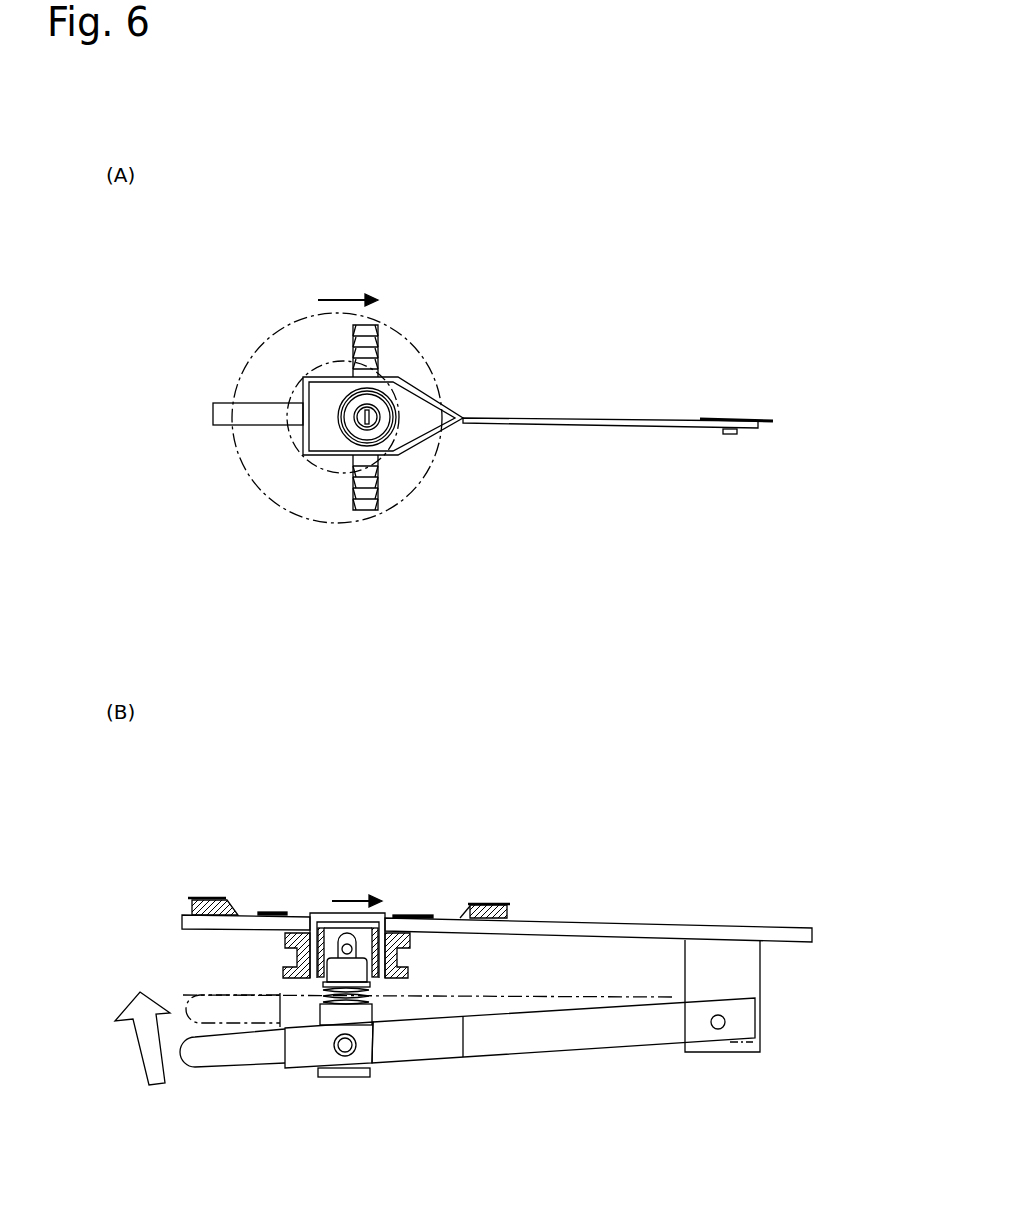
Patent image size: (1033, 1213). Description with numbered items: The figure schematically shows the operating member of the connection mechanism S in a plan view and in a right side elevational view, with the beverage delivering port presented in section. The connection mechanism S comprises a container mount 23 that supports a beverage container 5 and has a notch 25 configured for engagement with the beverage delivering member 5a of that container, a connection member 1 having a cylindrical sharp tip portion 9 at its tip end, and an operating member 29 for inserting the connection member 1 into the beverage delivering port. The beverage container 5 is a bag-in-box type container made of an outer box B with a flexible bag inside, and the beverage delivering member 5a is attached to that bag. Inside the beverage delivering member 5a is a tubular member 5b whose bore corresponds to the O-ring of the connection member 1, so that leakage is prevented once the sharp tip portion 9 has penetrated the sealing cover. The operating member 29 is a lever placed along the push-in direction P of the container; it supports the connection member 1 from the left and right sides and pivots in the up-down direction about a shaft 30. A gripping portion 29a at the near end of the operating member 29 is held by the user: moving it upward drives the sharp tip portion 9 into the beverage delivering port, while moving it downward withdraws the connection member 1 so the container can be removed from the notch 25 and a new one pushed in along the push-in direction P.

The connection member 1 is at (390, 403).
The sharp tip portion 9 is at (381, 413).
The beverage container 5 is at (427, 467).
The beverage delivering member 5a is at (322, 467).
The tubular member 5b is at (303, 452).
The operating member 29 is at (608, 427).
The gripping portion 29a is at (227, 417).
The shaft 30 is at (732, 435).
The container mount 23 is at (793, 945).
The notch 25 is at (258, 925).
The outer box B is at (508, 913).
The connection mechanism S is at (602, 312).
The push-in direction P is at (364, 602).